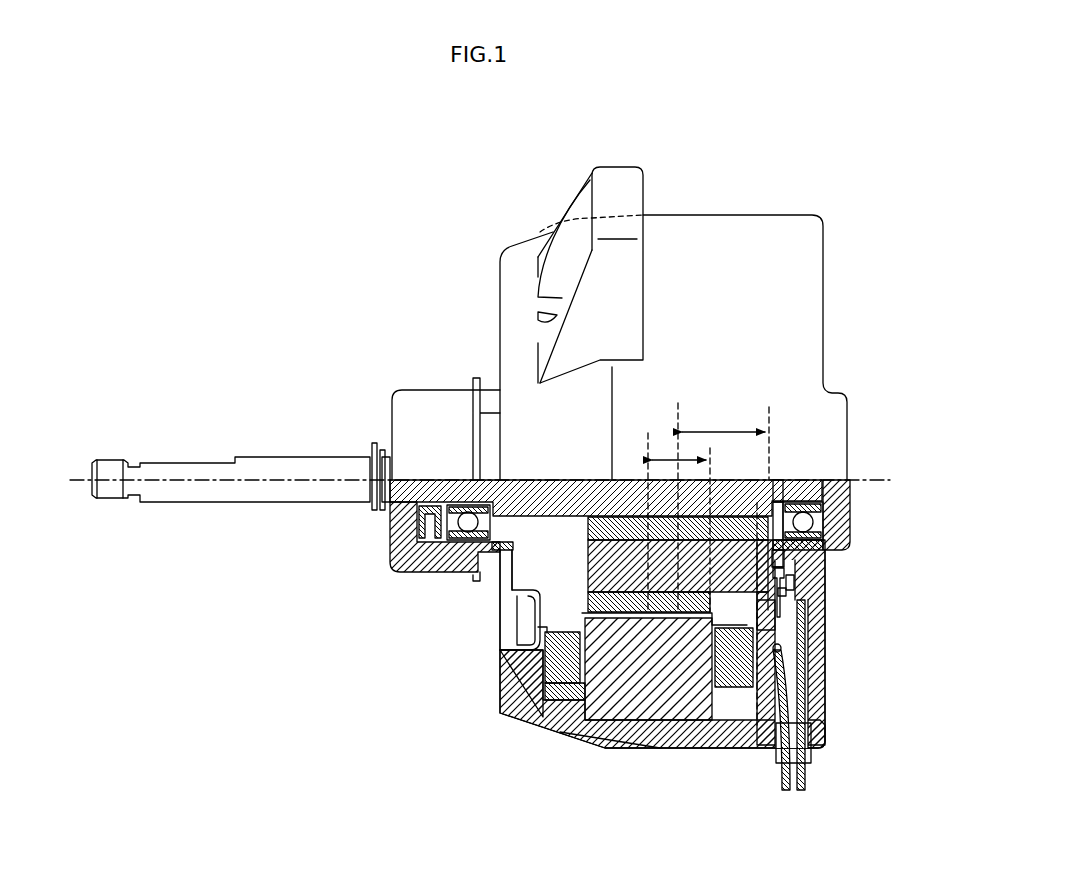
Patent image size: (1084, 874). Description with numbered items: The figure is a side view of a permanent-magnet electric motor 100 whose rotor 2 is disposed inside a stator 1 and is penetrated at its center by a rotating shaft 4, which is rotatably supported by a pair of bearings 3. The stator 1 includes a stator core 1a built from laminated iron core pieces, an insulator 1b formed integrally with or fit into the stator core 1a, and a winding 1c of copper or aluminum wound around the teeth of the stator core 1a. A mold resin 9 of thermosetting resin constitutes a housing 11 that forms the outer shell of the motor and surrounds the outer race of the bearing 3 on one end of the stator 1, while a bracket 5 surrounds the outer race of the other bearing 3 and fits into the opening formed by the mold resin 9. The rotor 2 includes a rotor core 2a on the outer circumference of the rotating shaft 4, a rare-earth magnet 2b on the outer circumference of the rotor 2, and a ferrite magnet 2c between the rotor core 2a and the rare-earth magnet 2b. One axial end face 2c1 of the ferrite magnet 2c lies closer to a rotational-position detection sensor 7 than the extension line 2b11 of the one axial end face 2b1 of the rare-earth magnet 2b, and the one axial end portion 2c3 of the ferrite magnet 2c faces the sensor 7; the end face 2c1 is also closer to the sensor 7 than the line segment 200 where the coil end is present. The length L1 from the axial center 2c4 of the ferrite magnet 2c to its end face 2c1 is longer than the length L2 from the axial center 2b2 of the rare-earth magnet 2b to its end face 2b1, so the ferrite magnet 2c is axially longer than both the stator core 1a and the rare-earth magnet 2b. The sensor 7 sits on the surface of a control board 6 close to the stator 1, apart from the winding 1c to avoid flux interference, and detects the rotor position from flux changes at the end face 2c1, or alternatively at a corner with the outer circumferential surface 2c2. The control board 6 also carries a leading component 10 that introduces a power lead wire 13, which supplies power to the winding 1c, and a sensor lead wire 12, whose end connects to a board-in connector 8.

The electric motor 100 is at (580, 131).
The stator 1 is at (433, 685).
The stator core 1a is at (585, 703).
The insulator 1b is at (543, 690).
The winding 1c is at (540, 667).
The rotor 2 is at (433, 583).
The rotor core 2a is at (587, 533).
The rare-earth magnet 2b is at (587, 602).
The one axial end face of the rare-earth magnet 2b1 is at (760, 597).
The center of the rare-earth magnet in the axial direction 2b2 is at (648, 449).
The extension line of one axial end face of the rare-earth magnet 2b11 is at (693, 590).
The ferrite magnet 2c is at (587, 568).
The one axial end face of the ferrite magnet 2c1 is at (787, 563).
The outer circumferential surface of the ferrite magnet 2c2 is at (772, 615).
The one axial end portion of the ferrite magnet 2c3 is at (728, 620).
The center of the ferrite magnet in the axial direction 2c4 is at (680, 412).
The bearing 3 is at (457, 535).
The rotating shaft 4 is at (266, 457).
The bracket 5 is at (447, 526).
The control board 6 is at (790, 582).
The rotational-position detection sensor 7 is at (783, 591).
The board-in connector 8 is at (802, 568).
The mold resin 9 is at (613, 746).
The leading component 10 is at (826, 758).
The housing 11 is at (775, 483).
The sensor lead wire 12 is at (808, 778).
The power lead wire 13 is at (777, 778).
The line segment where the coil end is present 200 is at (757, 725).
The length from the center of the ferrite magnet to its one axial end face L1 is at (723, 507).
The length from the center of the rare-earth magnet to its one axial end face L2 is at (673, 457).